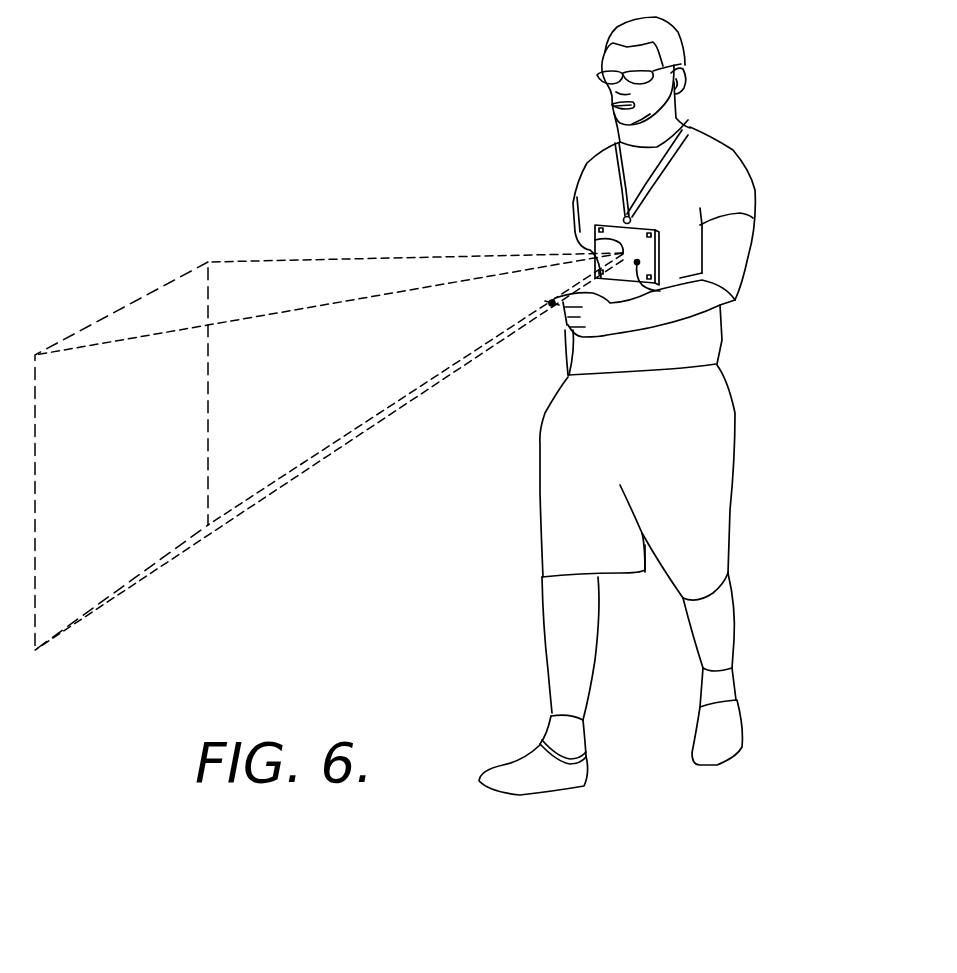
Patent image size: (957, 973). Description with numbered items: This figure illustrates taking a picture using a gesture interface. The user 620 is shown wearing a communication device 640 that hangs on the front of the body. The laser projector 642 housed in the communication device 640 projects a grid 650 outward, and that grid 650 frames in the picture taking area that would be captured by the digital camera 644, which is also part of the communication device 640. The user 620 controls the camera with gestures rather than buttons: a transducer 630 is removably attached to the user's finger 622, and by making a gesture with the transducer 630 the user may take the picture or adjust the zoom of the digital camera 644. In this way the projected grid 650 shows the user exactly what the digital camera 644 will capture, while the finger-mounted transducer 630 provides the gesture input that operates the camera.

The user 620 is at (755, 190).
The user's finger 622 is at (553, 327).
The transducer 630 is at (548, 303).
The communication device 640 is at (659, 252).
The laser projector 642 is at (595, 243).
The digital camera 644 is at (733, 300).
The grid 650 is at (143, 312).